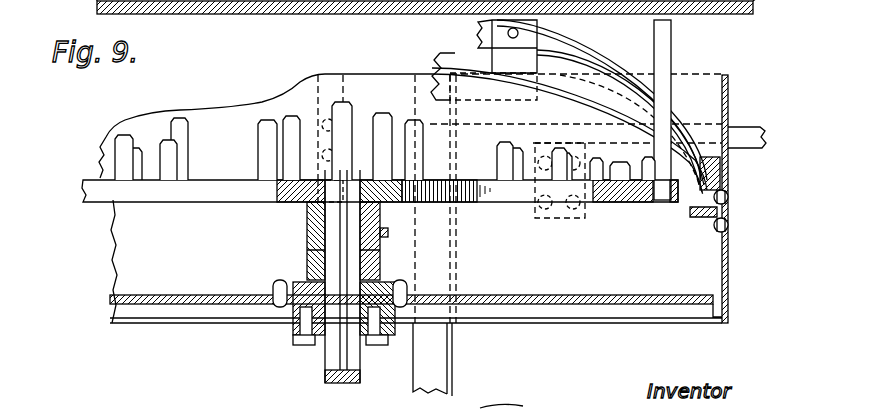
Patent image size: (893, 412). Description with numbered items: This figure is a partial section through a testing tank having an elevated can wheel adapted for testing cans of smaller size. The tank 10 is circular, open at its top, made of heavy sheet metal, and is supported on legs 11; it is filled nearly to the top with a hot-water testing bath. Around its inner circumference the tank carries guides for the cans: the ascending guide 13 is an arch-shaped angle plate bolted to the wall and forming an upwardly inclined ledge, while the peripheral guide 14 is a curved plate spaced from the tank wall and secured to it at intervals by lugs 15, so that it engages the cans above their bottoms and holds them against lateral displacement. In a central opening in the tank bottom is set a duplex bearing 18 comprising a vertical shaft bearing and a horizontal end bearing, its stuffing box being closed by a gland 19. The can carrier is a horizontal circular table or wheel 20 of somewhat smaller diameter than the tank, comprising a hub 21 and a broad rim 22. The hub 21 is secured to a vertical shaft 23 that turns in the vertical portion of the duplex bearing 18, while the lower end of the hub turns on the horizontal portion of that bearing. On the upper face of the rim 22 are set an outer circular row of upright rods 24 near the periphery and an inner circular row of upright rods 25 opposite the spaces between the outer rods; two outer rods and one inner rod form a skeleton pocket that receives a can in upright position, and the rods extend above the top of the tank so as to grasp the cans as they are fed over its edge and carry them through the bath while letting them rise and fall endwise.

The tank 10 is at (675, 285).
The legs 11 is at (437, 352).
The ascending guide 13 is at (440, 88).
The peripheral guide 14 is at (665, 99).
The lugs 15 is at (510, 60).
The duplex bearing 18 is at (373, 270).
The gland 19 is at (293, 345).
The wheel 20 is at (517, 195).
The hub 21 is at (377, 213).
The rim 22 is at (633, 203).
The vertical shaft 23 is at (333, 220).
The upright rods of the outer row 24 is at (671, 37).
The upright rods of the inner row 25 is at (292, 163).